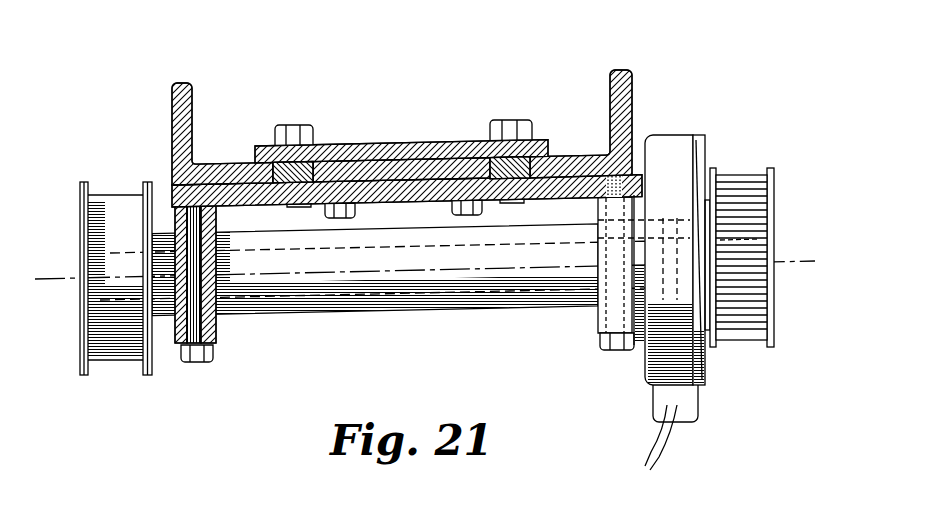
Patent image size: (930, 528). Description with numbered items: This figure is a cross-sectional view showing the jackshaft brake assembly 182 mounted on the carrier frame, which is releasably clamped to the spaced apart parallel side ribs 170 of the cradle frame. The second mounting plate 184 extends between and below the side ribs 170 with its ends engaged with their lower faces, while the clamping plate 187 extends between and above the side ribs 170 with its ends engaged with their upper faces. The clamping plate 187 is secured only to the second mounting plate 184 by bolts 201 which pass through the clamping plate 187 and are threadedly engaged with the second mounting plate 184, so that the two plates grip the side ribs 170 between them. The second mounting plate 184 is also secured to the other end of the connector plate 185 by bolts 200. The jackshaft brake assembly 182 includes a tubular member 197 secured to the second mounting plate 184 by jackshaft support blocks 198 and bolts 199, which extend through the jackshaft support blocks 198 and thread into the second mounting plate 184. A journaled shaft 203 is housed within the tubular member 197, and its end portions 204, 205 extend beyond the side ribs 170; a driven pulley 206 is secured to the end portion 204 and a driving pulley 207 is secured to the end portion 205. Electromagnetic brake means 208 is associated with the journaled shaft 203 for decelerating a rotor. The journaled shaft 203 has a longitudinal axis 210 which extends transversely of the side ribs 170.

The side ribs 170 is at (177, 104).
The jackshaft brake assembly 182 is at (700, 65).
The second mounting plate 184 is at (548, 188).
The connector plate 185 is at (358, 176).
The clamping plate 187 is at (418, 150).
The tubular member 197 is at (385, 310).
The jackshaft support blocks 198 is at (215, 334).
The bolts 199 is at (198, 362).
The bolts 200 is at (455, 210).
The bolts 201 is at (293, 130).
The journaled shaft 203 is at (298, 302).
The end portion 204 is at (735, 245).
The end portion 205 is at (118, 252).
The driven pulley 206 is at (735, 173).
The driving pulley 207 is at (118, 207).
The electromagnetic brake means 208 is at (688, 128).
The longitudinal axis 210 is at (68, 280).